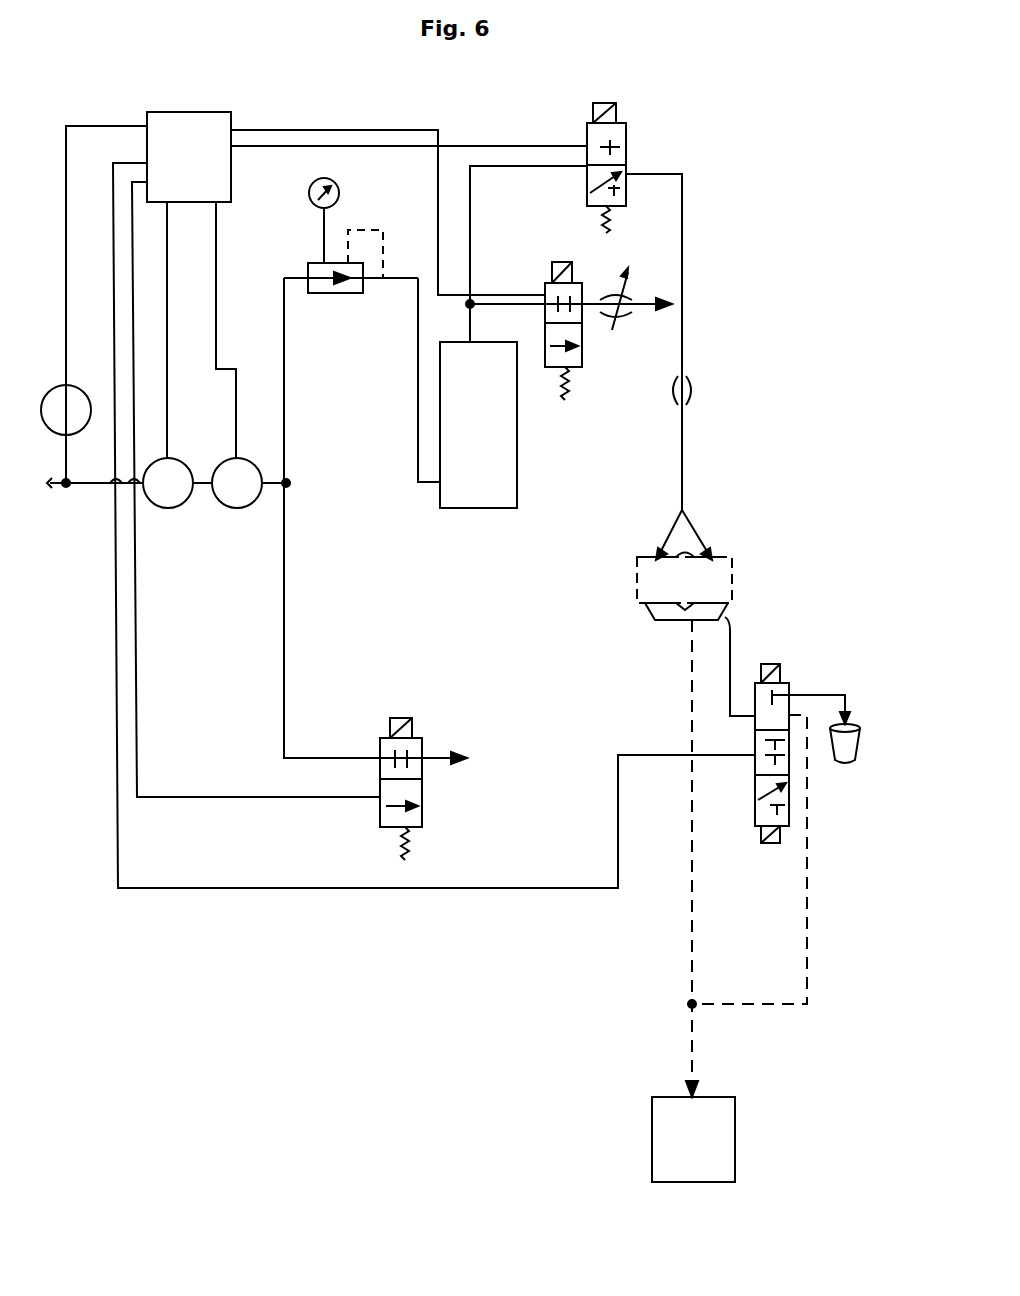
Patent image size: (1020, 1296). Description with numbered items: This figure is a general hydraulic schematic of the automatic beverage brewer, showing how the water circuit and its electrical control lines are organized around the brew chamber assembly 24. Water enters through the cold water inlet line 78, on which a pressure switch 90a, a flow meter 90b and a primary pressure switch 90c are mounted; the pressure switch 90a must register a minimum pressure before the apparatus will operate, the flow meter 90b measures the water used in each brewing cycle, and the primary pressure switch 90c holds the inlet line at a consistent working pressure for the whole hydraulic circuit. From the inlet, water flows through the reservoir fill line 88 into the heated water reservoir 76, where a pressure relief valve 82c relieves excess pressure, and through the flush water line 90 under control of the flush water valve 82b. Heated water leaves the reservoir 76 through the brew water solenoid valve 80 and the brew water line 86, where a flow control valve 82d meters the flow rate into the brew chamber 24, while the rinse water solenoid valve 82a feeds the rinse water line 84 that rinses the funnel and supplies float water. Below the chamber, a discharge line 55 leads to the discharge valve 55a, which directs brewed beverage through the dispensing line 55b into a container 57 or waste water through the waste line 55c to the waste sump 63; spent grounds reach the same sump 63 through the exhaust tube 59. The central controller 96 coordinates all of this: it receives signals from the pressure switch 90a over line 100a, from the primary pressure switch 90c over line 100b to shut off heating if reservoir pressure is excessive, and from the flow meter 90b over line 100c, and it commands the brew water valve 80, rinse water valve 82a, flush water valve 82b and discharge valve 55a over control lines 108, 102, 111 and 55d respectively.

The brew chamber assembly 24 is at (724, 556).
The discharge line 55 is at (725, 616).
The discharge valve 55a is at (796, 684).
The dispensing line 55b is at (850, 705).
The waste line 55c is at (806, 942).
The control line 55d is at (118, 828).
The container 57 is at (845, 762).
The exhaust tube 59 is at (692, 945).
The waste sump 63 is at (652, 1135).
The heated water reservoir 76 is at (500, 500).
The cold water inlet line 78 is at (204, 480).
The brew water solenoid valve 80 is at (587, 128).
The rinse water solenoid valve 82a is at (545, 292).
The flush water valve 82b is at (380, 816).
The pressure relief valve 82c is at (336, 293).
The flow control valve 82d is at (690, 383).
The rinse water line 84 is at (490, 308).
The brew water line 86 is at (507, 166).
The reservoir fill line 88 is at (412, 278).
The flush water line 90 is at (288, 612).
The pressure switch 90a is at (52, 436).
The flow meter 90b is at (160, 507).
The primary pressure switch 90c is at (240, 508).
The central controller 96 is at (214, 128).
The control line 100a is at (66, 128).
The control line 100b is at (217, 333).
The control line 100c is at (168, 270).
The control line 102 is at (438, 224).
The control line 108 is at (514, 146).
The control line 111 is at (278, 797).